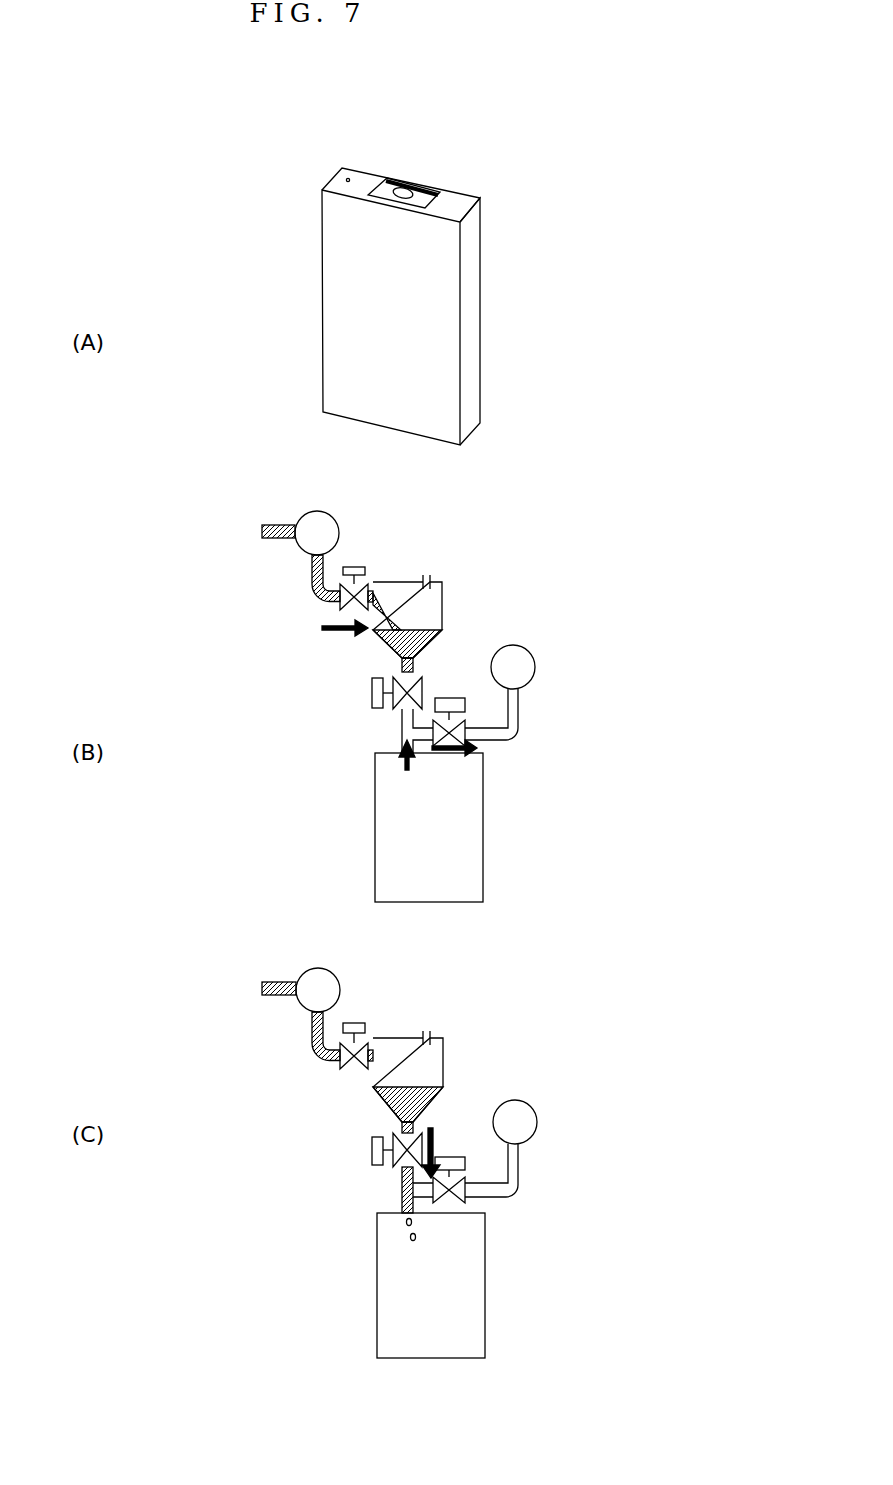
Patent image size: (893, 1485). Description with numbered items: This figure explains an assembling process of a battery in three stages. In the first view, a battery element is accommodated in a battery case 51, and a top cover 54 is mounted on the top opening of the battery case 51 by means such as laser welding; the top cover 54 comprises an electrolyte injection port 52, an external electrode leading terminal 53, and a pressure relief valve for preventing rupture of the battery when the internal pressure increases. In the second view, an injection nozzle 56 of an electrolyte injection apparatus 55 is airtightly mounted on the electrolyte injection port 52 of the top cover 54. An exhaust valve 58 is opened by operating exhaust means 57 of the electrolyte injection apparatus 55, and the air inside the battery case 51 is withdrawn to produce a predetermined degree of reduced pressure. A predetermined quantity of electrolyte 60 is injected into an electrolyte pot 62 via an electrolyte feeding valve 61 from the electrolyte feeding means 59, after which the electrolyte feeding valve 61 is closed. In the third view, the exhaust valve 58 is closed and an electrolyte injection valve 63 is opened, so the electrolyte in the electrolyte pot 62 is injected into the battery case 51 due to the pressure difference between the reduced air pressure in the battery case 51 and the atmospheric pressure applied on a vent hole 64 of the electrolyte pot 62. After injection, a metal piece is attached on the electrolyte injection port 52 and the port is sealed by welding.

The battery case 51 is at (472, 312).
The electrolyte injection port 52 is at (340, 169).
The external electrode leading terminal 53 is at (417, 193).
The top cover 54 is at (457, 213).
The electrolyte injection apparatus 55 is at (183, 620).
The injection nozzle 56 is at (402, 740).
The exhaust means 57 is at (530, 655).
The exhaust valve 58 is at (452, 705).
The electrolyte feeding means 59 is at (335, 523).
The electrolyte 60 is at (383, 602).
The electrolyte feeding valve 61 is at (340, 608).
The electrolyte pot 62 is at (443, 600).
The electrolyte injection valve 63 is at (370, 702).
The vent hole 64 is at (430, 572).